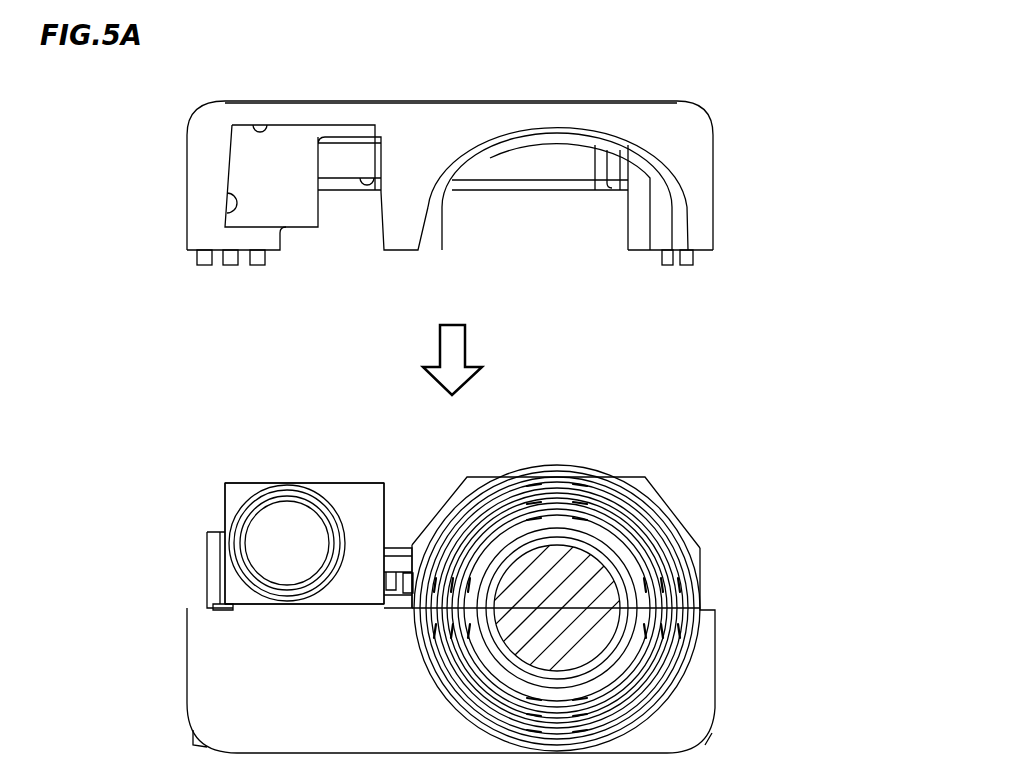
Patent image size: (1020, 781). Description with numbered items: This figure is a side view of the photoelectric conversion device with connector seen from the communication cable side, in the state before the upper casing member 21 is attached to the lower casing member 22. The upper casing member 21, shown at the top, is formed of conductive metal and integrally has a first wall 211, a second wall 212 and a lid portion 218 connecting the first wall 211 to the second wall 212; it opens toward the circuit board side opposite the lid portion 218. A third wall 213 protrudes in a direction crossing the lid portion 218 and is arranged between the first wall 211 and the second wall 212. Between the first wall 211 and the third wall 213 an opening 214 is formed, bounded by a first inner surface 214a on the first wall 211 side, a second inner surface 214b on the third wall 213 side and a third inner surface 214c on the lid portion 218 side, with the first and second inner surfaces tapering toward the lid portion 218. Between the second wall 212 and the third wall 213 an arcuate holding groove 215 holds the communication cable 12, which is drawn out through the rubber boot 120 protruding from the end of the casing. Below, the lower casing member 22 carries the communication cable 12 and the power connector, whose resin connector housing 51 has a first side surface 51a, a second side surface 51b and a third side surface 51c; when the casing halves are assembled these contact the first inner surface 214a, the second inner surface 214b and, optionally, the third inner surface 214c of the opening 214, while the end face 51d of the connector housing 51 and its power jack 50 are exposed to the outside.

The upper casing member 21 is at (650, 102).
The first wall 211 is at (193, 240).
The second wall 212 is at (698, 240).
The third wall 213 is at (400, 240).
The opening 214 is at (303, 235).
The first inner surface 214a is at (233, 196).
The second inner surface 214b is at (367, 177).
The third inner surface 214c is at (260, 124).
The holding groove 215 is at (550, 233).
The lid portion 218 is at (443, 110).
The lower casing member 22 is at (713, 688).
The rubber boot 120 is at (637, 513).
The communication cable 12 is at (600, 587).
The power jack 50 is at (238, 580).
The connector housing 51 is at (353, 495).
The first side surface 51a is at (225, 503).
The second side surface 51b is at (385, 497).
The third side surface 51c is at (333, 480).
The end face 51d is at (340, 597).